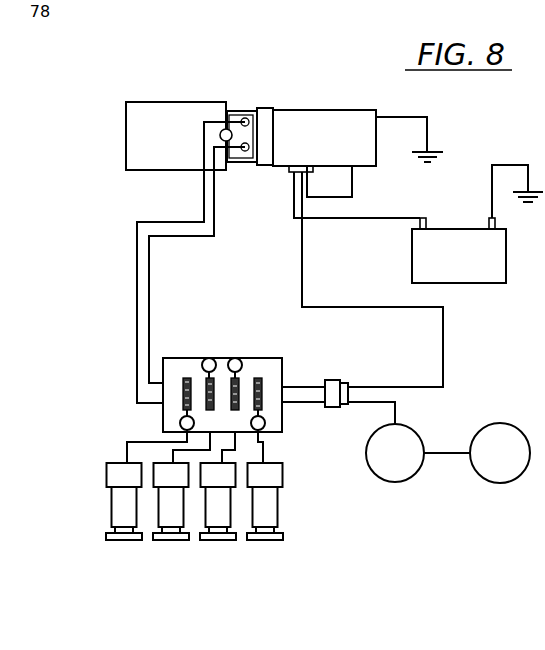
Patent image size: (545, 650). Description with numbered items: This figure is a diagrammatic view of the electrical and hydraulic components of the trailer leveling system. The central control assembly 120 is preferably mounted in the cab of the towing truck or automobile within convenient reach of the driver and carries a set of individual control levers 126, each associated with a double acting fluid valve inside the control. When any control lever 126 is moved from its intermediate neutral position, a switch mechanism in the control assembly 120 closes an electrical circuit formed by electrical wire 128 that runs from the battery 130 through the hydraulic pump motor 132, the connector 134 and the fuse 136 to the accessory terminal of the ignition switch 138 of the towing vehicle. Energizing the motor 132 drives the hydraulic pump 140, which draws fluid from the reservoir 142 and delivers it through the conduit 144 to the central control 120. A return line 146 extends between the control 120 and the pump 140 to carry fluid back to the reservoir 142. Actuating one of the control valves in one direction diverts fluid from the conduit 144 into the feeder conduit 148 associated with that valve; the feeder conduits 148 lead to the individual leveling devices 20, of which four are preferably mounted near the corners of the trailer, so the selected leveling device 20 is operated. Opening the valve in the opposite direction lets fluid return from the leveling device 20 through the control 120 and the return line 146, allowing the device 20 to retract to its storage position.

The leveling device 20 is at (175, 510).
The central control assembly 120 is at (224, 368).
The control lever 126 is at (258, 376).
The electrical wire 128 is at (492, 186).
The battery 130 is at (489, 270).
The hydraulic pump motor 132 is at (308, 118).
The connector 134 is at (342, 383).
The fuse 136 is at (380, 468).
The ignition switch 138 is at (485, 468).
The hydraulic pump 140 is at (248, 112).
The reservoir 142 is at (140, 120).
The conduit 144 is at (215, 229).
The return line 146 is at (137, 276).
The feeder conduit 148 is at (172, 453).